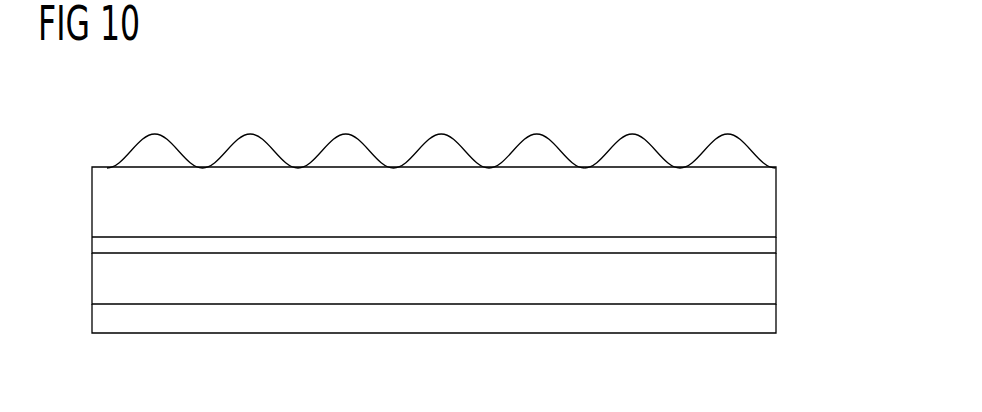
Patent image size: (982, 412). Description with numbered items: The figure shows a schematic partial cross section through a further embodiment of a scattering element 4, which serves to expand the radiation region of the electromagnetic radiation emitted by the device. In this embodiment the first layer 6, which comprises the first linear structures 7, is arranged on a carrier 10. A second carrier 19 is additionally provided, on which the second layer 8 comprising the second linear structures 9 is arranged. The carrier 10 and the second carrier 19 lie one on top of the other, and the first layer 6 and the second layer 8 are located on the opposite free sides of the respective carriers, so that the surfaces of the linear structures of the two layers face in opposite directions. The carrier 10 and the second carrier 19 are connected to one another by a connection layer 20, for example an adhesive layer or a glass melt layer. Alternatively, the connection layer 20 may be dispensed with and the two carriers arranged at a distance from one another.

The scattering element 4 is at (436, 221).
The first layer 6 is at (477, 125).
The first linear structures 7 is at (645, 147).
The second layer 8 is at (470, 346).
The second linear structures 9 is at (679, 325).
The carrier 10 is at (762, 205).
The second carrier 19 is at (768, 292).
The connection layer 20 is at (766, 246).